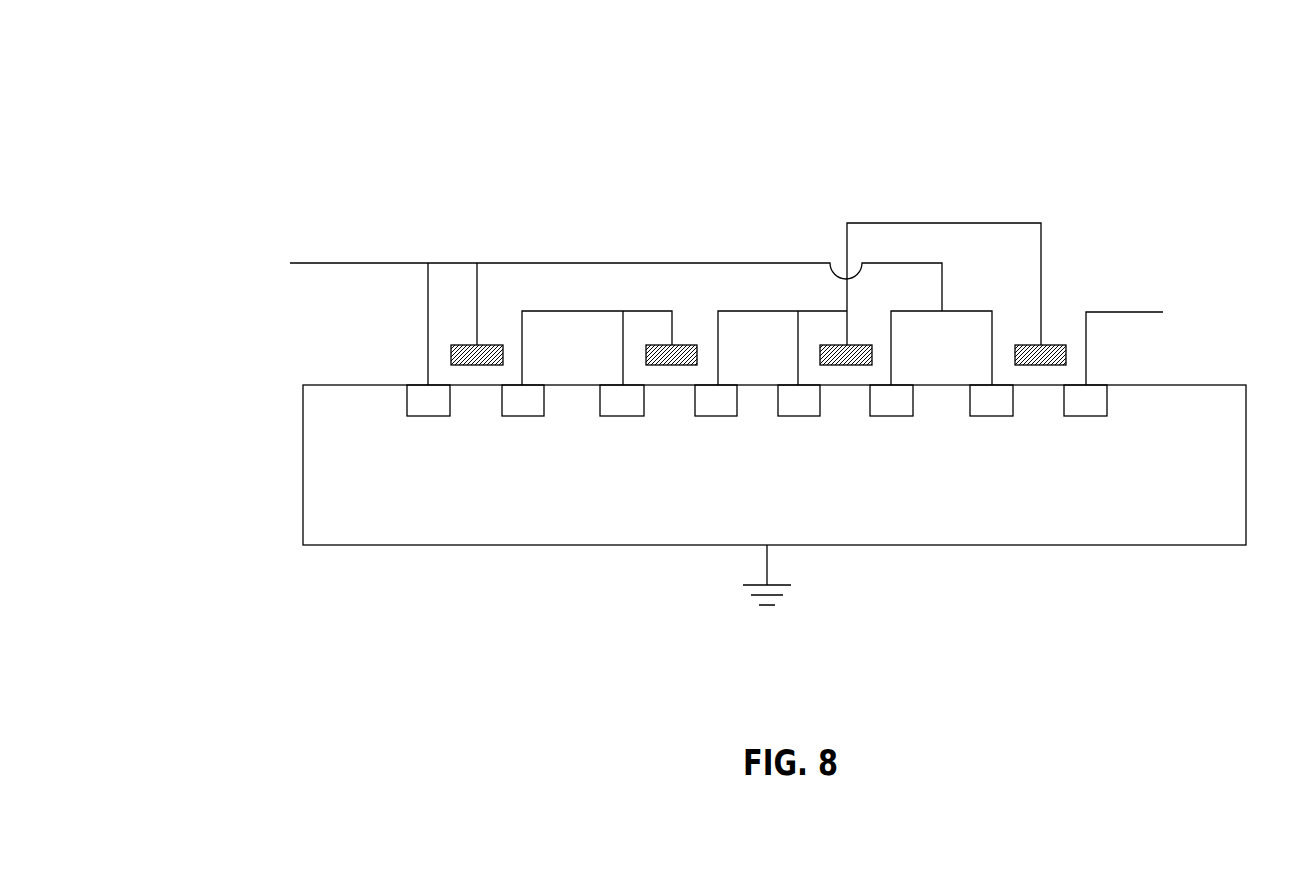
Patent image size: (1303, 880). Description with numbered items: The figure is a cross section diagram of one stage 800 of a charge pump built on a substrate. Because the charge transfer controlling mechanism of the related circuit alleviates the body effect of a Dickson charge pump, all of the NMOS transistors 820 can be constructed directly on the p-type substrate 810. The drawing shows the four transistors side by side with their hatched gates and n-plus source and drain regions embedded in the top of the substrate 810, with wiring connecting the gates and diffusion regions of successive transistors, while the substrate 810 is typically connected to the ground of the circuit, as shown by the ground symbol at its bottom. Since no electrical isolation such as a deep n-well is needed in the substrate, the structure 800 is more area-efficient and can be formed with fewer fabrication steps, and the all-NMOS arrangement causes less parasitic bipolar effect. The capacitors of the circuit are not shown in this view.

The stage of the charge pump 800 is at (343, 66).
The p-type substrate 810 is at (774, 501).
The NMOS transistors 820 is at (1037, 153).